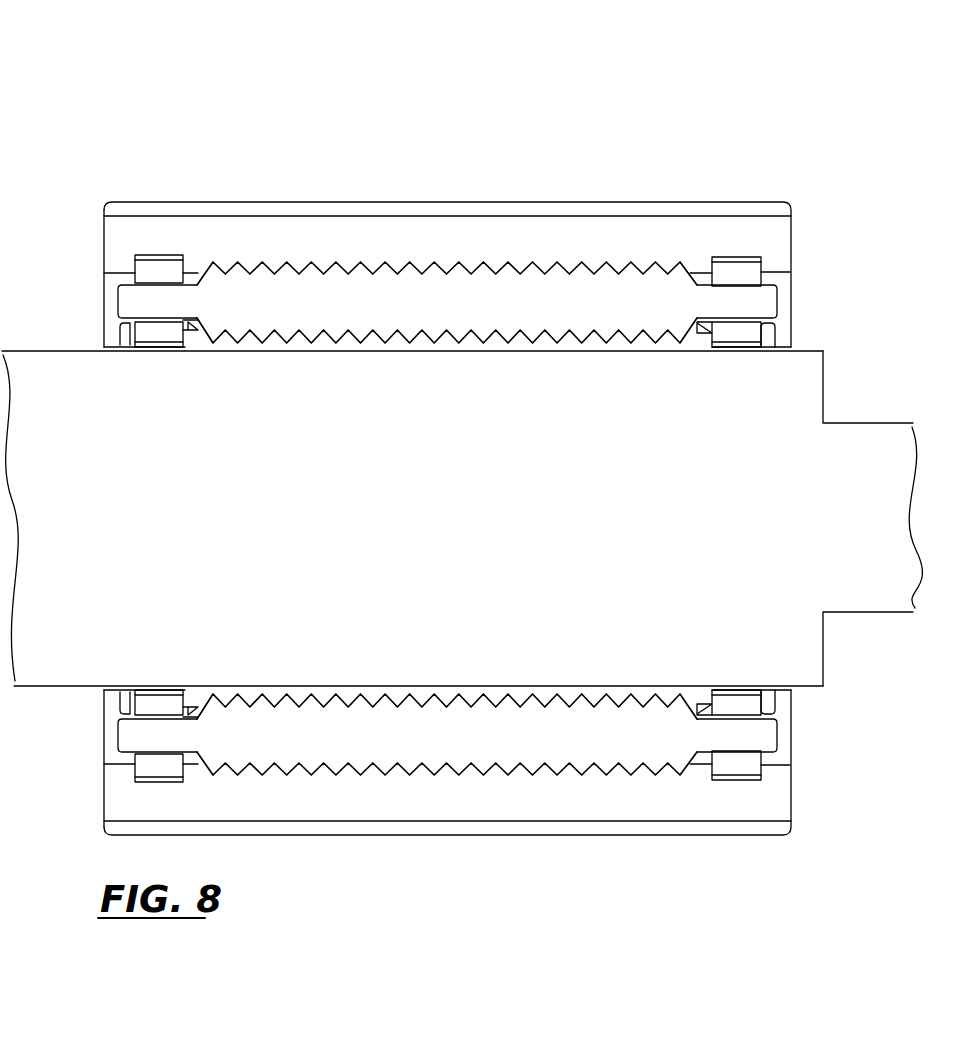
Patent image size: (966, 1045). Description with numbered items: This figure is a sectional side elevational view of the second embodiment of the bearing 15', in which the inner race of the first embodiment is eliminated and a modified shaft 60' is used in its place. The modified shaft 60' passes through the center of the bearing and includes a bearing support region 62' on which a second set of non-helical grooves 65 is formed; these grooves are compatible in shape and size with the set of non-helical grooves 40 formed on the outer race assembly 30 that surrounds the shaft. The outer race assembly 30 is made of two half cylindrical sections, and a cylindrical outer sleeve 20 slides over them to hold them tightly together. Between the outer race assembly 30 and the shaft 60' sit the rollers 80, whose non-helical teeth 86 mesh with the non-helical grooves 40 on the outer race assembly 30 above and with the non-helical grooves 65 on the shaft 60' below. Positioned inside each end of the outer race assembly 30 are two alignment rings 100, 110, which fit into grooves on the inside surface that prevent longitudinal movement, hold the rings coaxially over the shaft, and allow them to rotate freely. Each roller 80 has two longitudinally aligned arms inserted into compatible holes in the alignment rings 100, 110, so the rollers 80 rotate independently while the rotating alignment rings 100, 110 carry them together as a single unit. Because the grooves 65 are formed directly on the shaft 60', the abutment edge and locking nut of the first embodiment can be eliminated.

The bearing 15' is at (462, 447).
The outer sleeve 20 is at (675, 198).
The outer race assembly 30 is at (113, 240).
The alignment ring 110 is at (158, 255).
The alignment ring 100 is at (740, 257).
The roller 80 is at (447, 314).
The non-helical teeth 86 is at (347, 329).
The non-helical grooves 40 is at (318, 259).
The non-helical grooves 65 is at (334, 344).
The bearing support region 62' is at (462, 518).
The modified shaft 60' is at (872, 518).